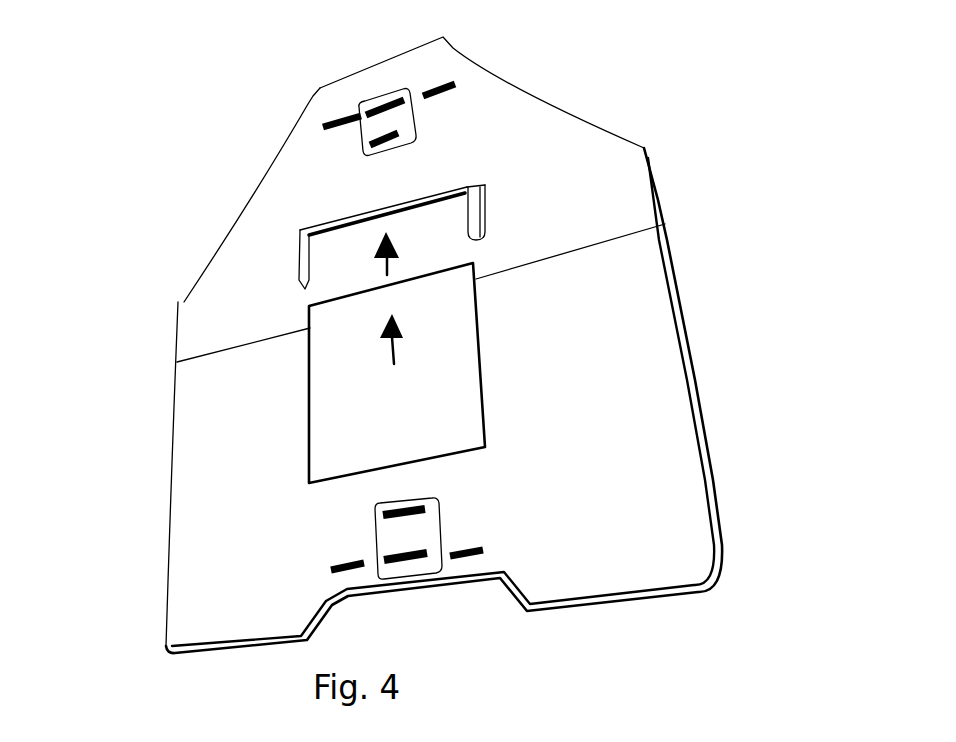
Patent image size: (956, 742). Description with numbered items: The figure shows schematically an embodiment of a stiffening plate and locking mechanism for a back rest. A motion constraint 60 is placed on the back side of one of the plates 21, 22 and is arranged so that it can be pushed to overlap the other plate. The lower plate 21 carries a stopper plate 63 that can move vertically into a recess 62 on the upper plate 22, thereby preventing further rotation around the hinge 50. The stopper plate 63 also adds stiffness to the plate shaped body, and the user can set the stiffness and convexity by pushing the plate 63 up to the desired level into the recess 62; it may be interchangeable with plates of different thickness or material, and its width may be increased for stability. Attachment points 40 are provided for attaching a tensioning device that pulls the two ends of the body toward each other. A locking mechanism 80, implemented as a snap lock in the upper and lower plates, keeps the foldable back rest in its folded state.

The lower plate 21 is at (217, 455).
The upper plate 22 is at (615, 200).
The attachment points 40 is at (328, 117).
The hinge 50 is at (668, 228).
The motion constraint 60 is at (283, 301).
The recess 62 is at (465, 186).
The stopper plate 63 is at (433, 383).
The locking mechanism 80 is at (367, 137).